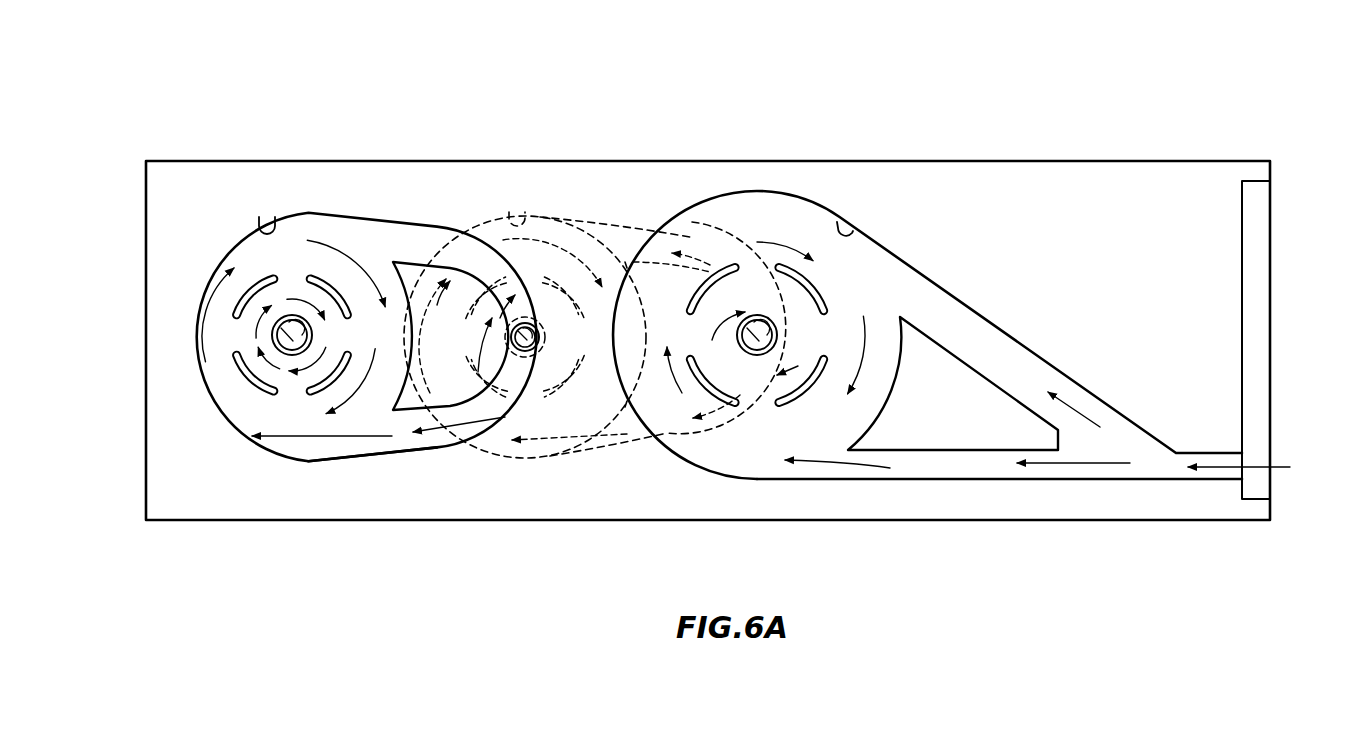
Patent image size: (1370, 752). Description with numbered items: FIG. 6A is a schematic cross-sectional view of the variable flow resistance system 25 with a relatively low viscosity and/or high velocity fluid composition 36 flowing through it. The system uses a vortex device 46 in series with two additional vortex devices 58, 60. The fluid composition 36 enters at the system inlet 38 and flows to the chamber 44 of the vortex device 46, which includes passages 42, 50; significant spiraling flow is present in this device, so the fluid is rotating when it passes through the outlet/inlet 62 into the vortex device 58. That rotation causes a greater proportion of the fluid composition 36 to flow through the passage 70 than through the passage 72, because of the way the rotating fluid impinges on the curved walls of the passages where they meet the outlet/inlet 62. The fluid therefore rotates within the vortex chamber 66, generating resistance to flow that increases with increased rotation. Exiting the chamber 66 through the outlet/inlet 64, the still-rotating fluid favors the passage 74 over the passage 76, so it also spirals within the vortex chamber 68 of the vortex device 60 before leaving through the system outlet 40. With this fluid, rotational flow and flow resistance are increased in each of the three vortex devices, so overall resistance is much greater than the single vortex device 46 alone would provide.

The variable flow resistance system 25 is at (1147, 84).
The fluid composition 36 is at (203, 302).
The inlet 38 is at (1257, 231).
The outlet 40 is at (313, 335).
The passage 42 is at (977, 482).
The chamber 44 is at (857, 235).
The vortex device 46 is at (882, 490).
The passage 50 is at (1028, 347).
The vortex device 58 is at (601, 451).
The vortex device 60 is at (367, 345).
The outlet/inlet 62 is at (778, 337).
The outlet/inlet 64 is at (542, 338).
The vortex chamber 66 is at (520, 213).
The vortex chamber 68 is at (269, 232).
The passage 70 is at (677, 437).
The passage 72 is at (718, 226).
The passage 74 is at (424, 438).
The passage 76 is at (437, 233).